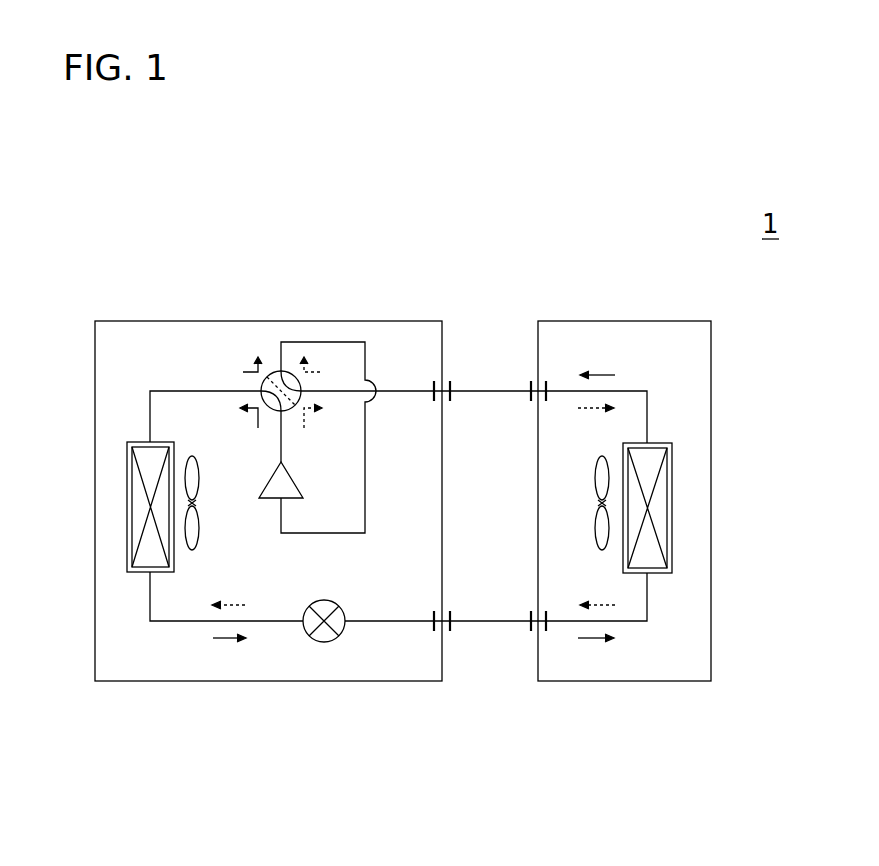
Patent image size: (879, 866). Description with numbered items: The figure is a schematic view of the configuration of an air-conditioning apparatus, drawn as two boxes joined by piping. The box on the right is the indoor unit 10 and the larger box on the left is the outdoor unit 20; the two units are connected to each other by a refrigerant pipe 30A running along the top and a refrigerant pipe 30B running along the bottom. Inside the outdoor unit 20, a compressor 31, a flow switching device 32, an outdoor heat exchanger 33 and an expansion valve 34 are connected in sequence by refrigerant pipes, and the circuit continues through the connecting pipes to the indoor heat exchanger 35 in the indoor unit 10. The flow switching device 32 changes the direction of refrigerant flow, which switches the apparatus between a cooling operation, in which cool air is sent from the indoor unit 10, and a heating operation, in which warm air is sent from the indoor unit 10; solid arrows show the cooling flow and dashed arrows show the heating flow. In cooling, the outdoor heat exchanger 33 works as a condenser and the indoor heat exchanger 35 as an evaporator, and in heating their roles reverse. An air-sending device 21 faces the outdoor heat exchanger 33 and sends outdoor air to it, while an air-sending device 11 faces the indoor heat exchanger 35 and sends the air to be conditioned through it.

The indoor unit 10 is at (680, 321).
The air-sending device 11 is at (594, 486).
The outdoor unit 20 is at (405, 321).
The air-sending device 21 is at (190, 456).
The refrigerant pipe 30A is at (491, 388).
The refrigerant pipe 30B is at (485, 628).
The compressor 31 is at (258, 478).
The flow switching device 32 is at (270, 372).
The outdoor heat exchanger 33 is at (131, 442).
The expansion valve 34 is at (321, 642).
The indoor heat exchanger 35 is at (673, 473).